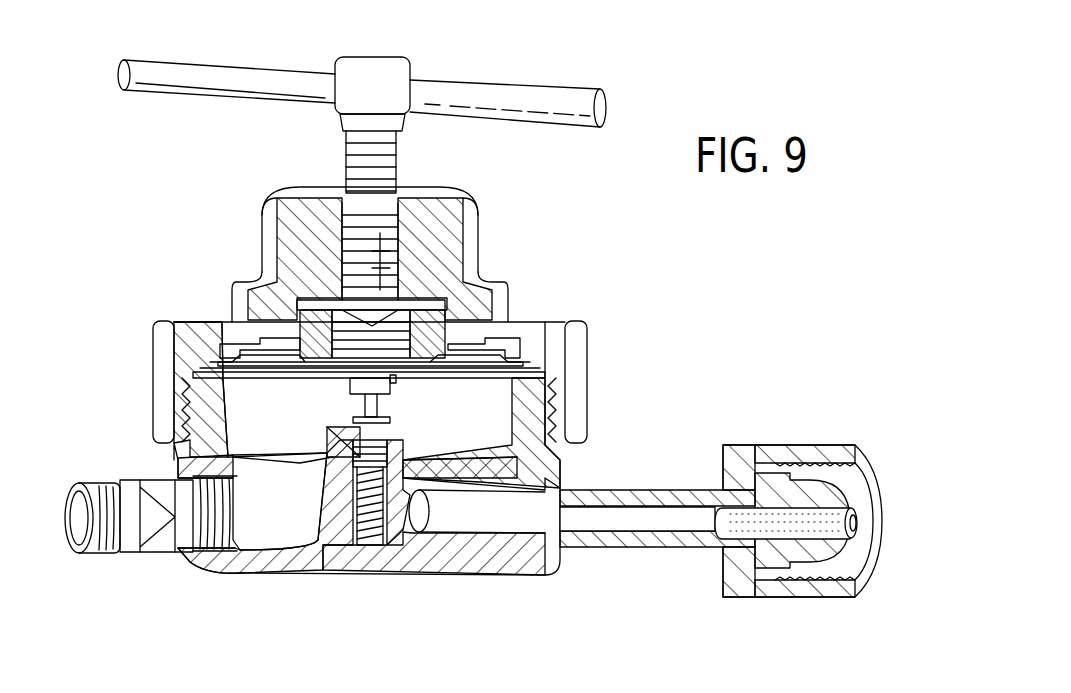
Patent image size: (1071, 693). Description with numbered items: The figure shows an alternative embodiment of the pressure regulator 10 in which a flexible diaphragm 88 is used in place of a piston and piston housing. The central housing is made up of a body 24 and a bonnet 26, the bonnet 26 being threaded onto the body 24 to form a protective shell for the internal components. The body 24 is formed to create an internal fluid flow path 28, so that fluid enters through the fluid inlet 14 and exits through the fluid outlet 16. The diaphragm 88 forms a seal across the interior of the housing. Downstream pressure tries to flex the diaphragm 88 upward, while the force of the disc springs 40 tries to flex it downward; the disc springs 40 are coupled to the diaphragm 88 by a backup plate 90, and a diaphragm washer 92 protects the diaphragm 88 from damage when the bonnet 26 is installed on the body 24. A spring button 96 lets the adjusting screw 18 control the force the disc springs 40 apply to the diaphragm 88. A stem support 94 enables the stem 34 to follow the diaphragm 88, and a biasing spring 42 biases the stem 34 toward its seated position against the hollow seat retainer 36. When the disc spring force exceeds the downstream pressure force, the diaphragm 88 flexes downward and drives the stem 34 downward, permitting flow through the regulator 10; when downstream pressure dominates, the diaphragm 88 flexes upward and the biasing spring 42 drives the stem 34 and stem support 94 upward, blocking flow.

The pressure regulator 10 is at (575, 62).
The fluid inlet 14 is at (783, 447).
The fluid outlet 16 is at (78, 520).
The adjusting screw 18 is at (378, 72).
The body 24 is at (230, 572).
The bonnet 26 is at (470, 237).
The internal fluid flow path 28 is at (403, 460).
The stem 34 is at (362, 403).
The seat retainer 36 is at (340, 421).
The disc springs 40 is at (300, 337).
The biasing spring 42 is at (352, 552).
The diaphragm 88 is at (565, 398).
The backup plate 90 is at (497, 335).
The diaphragm washer 92 is at (545, 362).
The stem support 94 is at (398, 386).
The spring button 96 is at (405, 296).